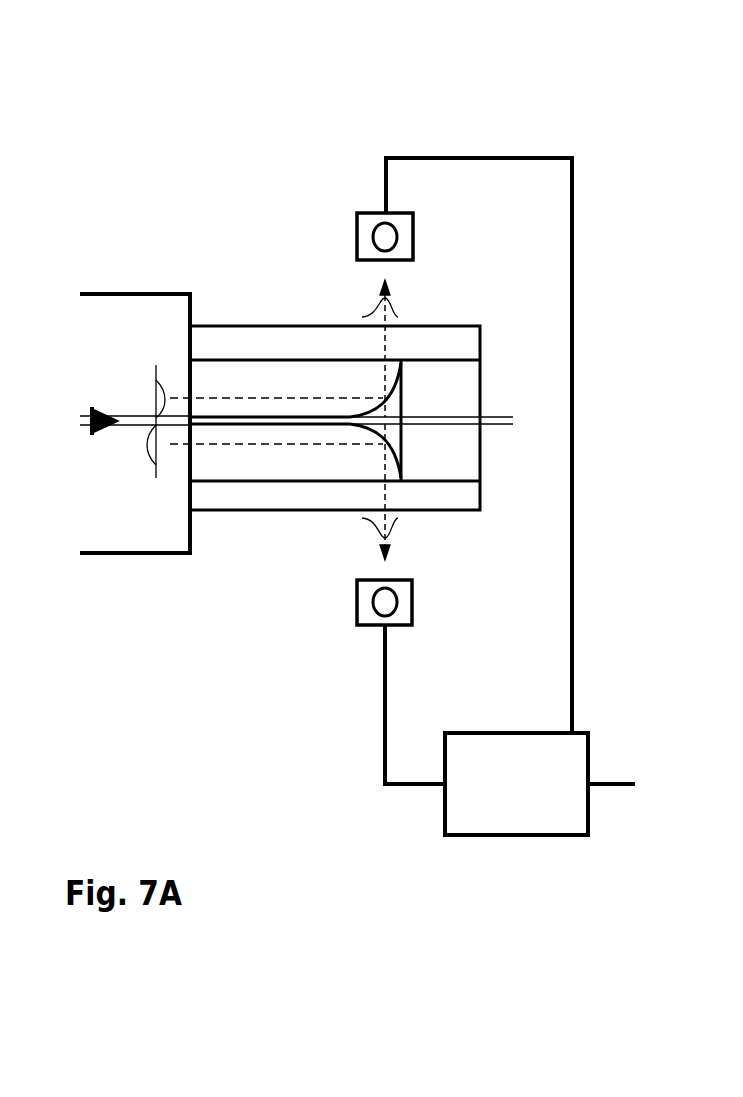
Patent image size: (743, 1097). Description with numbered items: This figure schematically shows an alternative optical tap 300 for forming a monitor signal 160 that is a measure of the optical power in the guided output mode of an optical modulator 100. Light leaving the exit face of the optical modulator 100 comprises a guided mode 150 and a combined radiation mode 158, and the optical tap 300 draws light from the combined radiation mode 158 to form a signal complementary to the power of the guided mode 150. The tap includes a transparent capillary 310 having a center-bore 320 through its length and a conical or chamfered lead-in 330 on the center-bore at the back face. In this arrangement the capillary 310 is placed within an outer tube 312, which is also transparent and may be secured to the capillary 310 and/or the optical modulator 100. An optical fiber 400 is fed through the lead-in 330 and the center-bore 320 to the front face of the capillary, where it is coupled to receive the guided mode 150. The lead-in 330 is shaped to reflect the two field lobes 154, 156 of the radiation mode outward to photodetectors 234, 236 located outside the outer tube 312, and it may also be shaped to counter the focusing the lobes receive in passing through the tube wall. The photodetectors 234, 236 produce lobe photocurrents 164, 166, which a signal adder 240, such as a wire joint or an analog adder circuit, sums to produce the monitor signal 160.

The optical modulator 100 is at (128, 255).
The guided mode 150 is at (101, 433).
The combined radiation mode 158 is at (163, 487).
The capillary 310 is at (240, 360).
The outer tube 312 is at (305, 326).
The center-bore 320 is at (288, 430).
The lead-in 330 is at (392, 403).
The optical fiber 400 is at (470, 428).
The field lobe 154 is at (392, 308).
The field lobe 156 is at (394, 527).
The photodetector 234 is at (370, 213).
The photodetector 236 is at (368, 625).
The lobe photocurrent 164 is at (572, 290).
The lobe photocurrent 166 is at (377, 745).
The signal adder 240 is at (490, 733).
The monitor signal 160 is at (605, 780).
The optical tap 300 is at (622, 165).